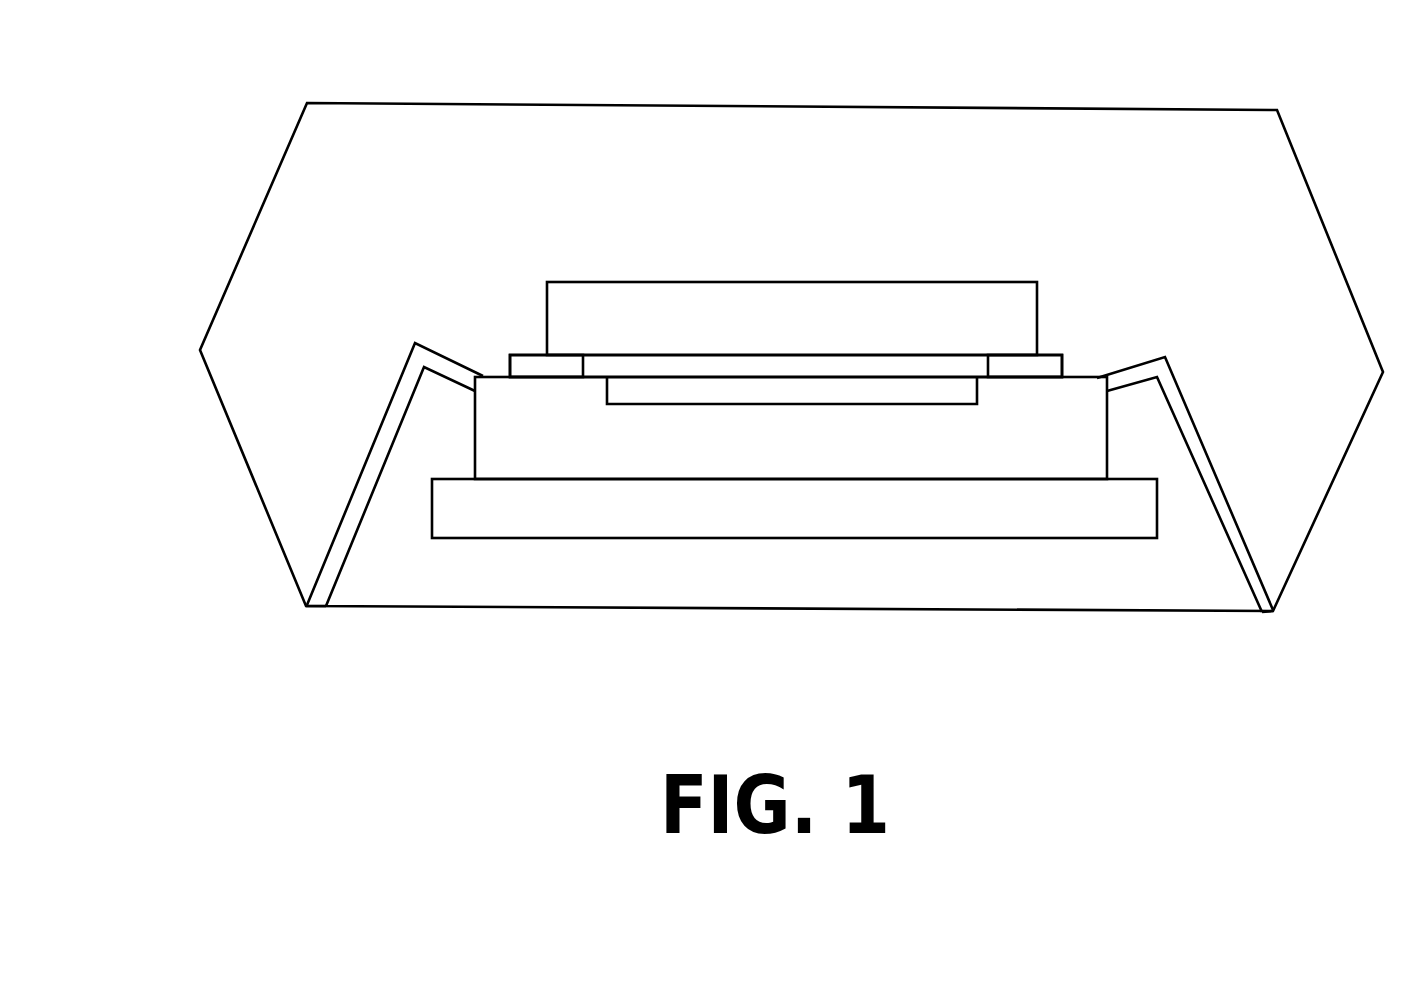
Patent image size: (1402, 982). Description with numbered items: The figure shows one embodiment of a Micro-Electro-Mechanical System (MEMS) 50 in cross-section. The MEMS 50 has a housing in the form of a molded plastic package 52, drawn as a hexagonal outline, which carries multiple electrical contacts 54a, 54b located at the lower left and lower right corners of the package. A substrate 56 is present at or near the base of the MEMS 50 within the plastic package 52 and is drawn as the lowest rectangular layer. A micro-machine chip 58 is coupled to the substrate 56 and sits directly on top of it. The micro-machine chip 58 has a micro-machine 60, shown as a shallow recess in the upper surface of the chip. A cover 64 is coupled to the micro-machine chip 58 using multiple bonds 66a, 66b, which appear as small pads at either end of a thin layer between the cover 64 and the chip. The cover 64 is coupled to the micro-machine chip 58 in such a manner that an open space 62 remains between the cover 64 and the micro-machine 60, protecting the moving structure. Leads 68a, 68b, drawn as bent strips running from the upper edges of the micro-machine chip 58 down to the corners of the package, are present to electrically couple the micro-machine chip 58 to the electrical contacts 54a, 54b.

The Micro-Electro-Mechanical System 50 is at (172, 120).
The molded plastic package 52 is at (262, 208).
The electrical contact 54a is at (315, 612).
The electrical contact 54b is at (1262, 614).
The substrate 56 is at (637, 523).
The micro-machine chip 58 is at (637, 463).
The micro-machine 60 is at (727, 400).
The open space 62 is at (976, 374).
The cover 64 is at (800, 341).
The bond 66a is at (530, 353).
The bond 66b is at (1050, 356).
The lead 68a is at (378, 430).
The lead 68b is at (1200, 440).